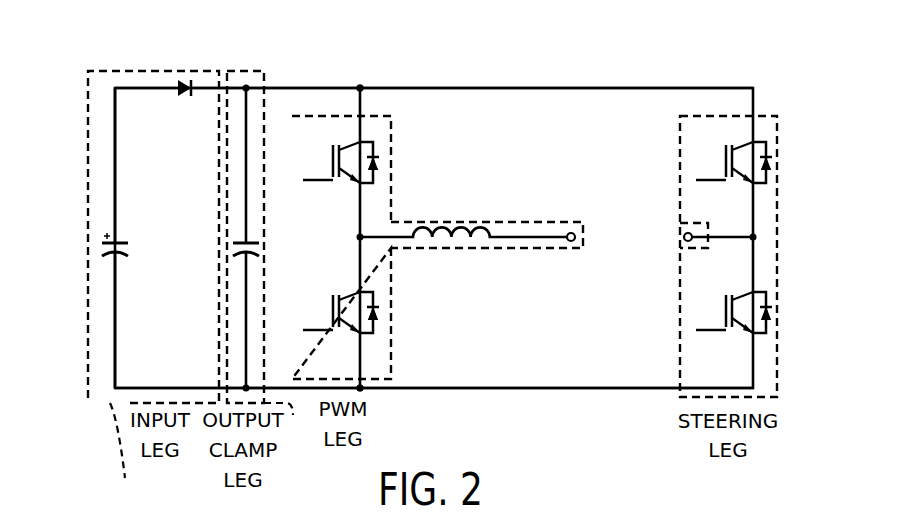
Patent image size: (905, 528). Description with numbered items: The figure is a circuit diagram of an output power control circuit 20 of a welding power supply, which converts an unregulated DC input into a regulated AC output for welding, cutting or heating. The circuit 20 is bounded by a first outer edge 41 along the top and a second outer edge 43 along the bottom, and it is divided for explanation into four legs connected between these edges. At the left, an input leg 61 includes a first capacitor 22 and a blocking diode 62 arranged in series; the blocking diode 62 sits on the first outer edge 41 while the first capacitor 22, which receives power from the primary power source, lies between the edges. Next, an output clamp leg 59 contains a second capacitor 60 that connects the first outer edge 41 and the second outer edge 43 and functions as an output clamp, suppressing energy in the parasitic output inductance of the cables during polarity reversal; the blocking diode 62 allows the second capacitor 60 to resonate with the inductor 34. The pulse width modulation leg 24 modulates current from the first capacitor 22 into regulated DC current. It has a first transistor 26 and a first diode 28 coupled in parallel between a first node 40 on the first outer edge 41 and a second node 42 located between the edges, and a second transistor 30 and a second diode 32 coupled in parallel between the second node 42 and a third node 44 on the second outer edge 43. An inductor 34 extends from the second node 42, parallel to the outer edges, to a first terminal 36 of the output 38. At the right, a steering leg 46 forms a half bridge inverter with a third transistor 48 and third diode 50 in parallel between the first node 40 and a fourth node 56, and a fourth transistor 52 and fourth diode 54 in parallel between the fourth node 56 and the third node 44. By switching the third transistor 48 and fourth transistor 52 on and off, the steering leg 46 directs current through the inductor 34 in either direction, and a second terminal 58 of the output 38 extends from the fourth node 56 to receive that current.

The output power control circuit 20 is at (570, 58).
The first capacitor 22 is at (128, 243).
The pulse width modulation (PWM) leg 24 is at (403, 374).
The first transistor 26 is at (333, 150).
The first diode 28 is at (380, 158).
The second transistor 30 is at (333, 300).
The second diode 32 is at (380, 308).
The inductor 34 is at (462, 238).
The first terminal 36 is at (568, 233).
The output 38 is at (604, 258).
The first node 40 is at (358, 86).
The first outer edge 41 is at (110, 82).
The second node 42 is at (357, 238).
The second outer edge 43 is at (105, 396).
The third node 44 is at (357, 384).
The steering leg 46 is at (678, 356).
The third transistor 48 is at (726, 150).
The third diode 50 is at (773, 158).
The fourth transistor 52 is at (726, 300).
The fourth diode 54 is at (773, 308).
The fourth node 56 is at (757, 236).
The second terminal 58 is at (691, 232).
The output clamp leg 59 is at (269, 262).
The second capacitor 60 is at (233, 250).
The input leg 61 is at (85, 320).
The blocking diode 62 is at (188, 96).